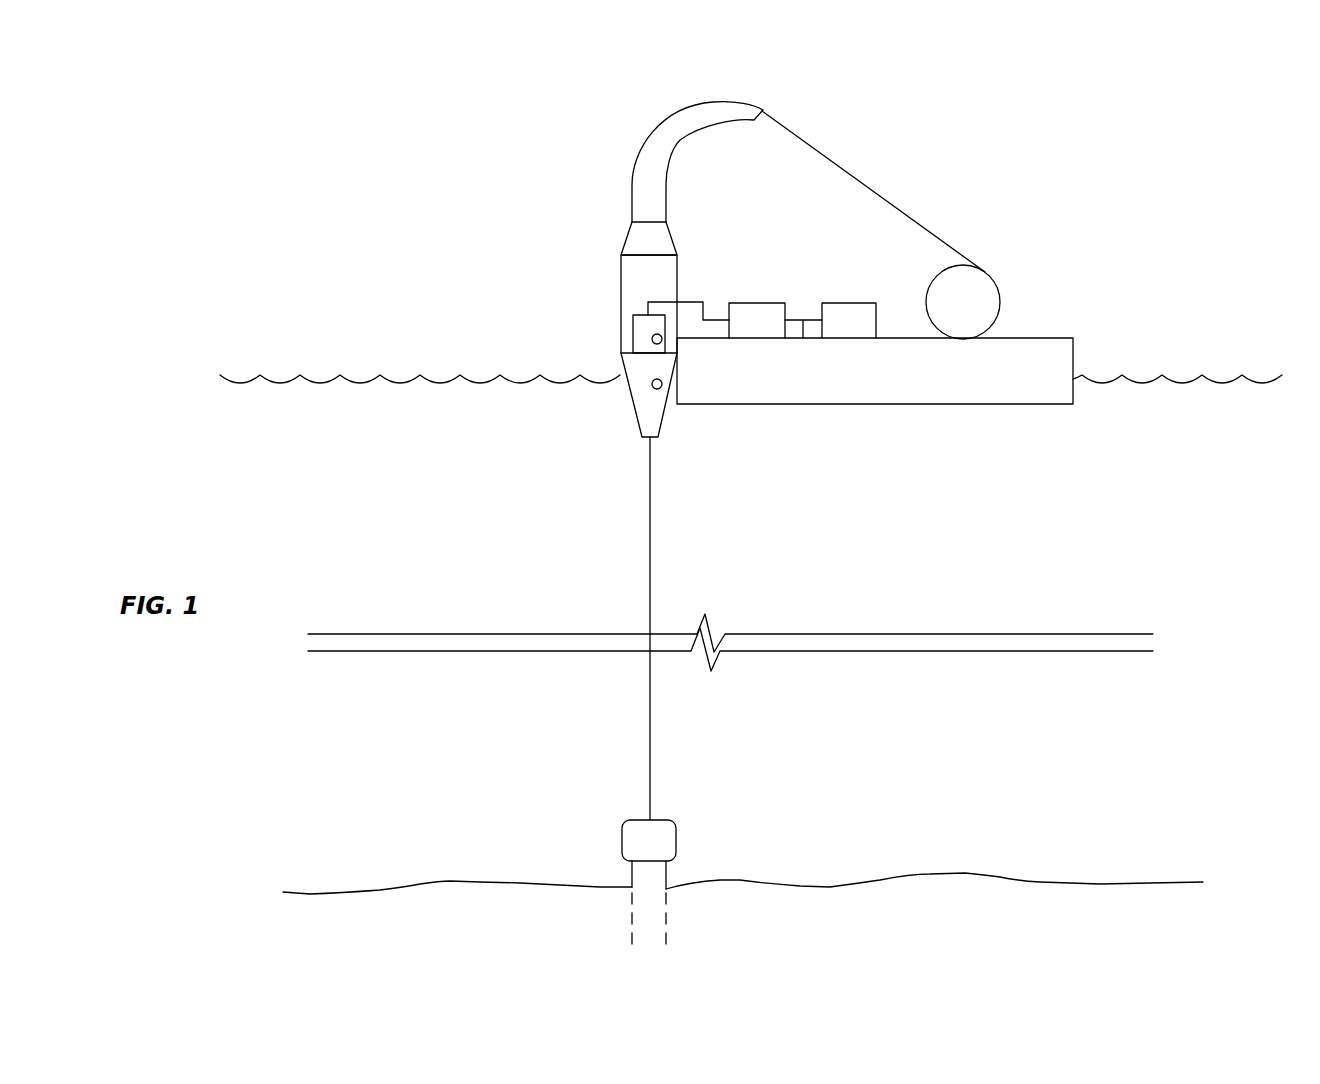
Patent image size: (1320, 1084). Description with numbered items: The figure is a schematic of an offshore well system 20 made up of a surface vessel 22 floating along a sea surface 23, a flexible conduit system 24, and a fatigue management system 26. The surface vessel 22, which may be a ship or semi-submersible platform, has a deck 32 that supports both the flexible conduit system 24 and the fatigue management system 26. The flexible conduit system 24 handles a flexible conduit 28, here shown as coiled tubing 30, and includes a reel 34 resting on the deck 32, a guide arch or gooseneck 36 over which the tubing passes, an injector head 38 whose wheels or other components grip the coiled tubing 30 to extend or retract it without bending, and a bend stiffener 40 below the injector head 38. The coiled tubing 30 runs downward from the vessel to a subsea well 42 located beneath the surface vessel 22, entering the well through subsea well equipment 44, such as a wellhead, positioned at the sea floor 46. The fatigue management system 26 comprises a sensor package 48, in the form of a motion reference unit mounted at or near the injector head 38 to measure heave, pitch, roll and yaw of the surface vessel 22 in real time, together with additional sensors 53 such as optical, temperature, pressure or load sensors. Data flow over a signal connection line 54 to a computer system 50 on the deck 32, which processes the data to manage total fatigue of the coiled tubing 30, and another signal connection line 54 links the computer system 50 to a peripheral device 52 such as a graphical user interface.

The well system 20 is at (540, 75).
The surface vessel 22 is at (922, 346).
The sea surface 23 is at (357, 381).
The flexible conduit system 24 is at (829, 212).
The fatigue management system 26 is at (781, 289).
The flexible conduit 28 is at (699, 628).
The coiled tubing 30 is at (650, 532).
The deck 32 is at (1062, 337).
The reel 34 is at (980, 280).
The guide arch or gooseneck 36 is at (658, 143).
The injector head 38 is at (627, 277).
The bend stiffener 40 is at (648, 407).
The subsea well 42 is at (678, 918).
The subsea well equipment 44 is at (692, 828).
The sea floor 46 is at (420, 884).
The sensor package 48 is at (645, 326).
The computer system 50 is at (768, 308).
The peripheral device 52 is at (843, 308).
The additional sensors 53 is at (662, 382).
The signal connection line 54 is at (688, 302).